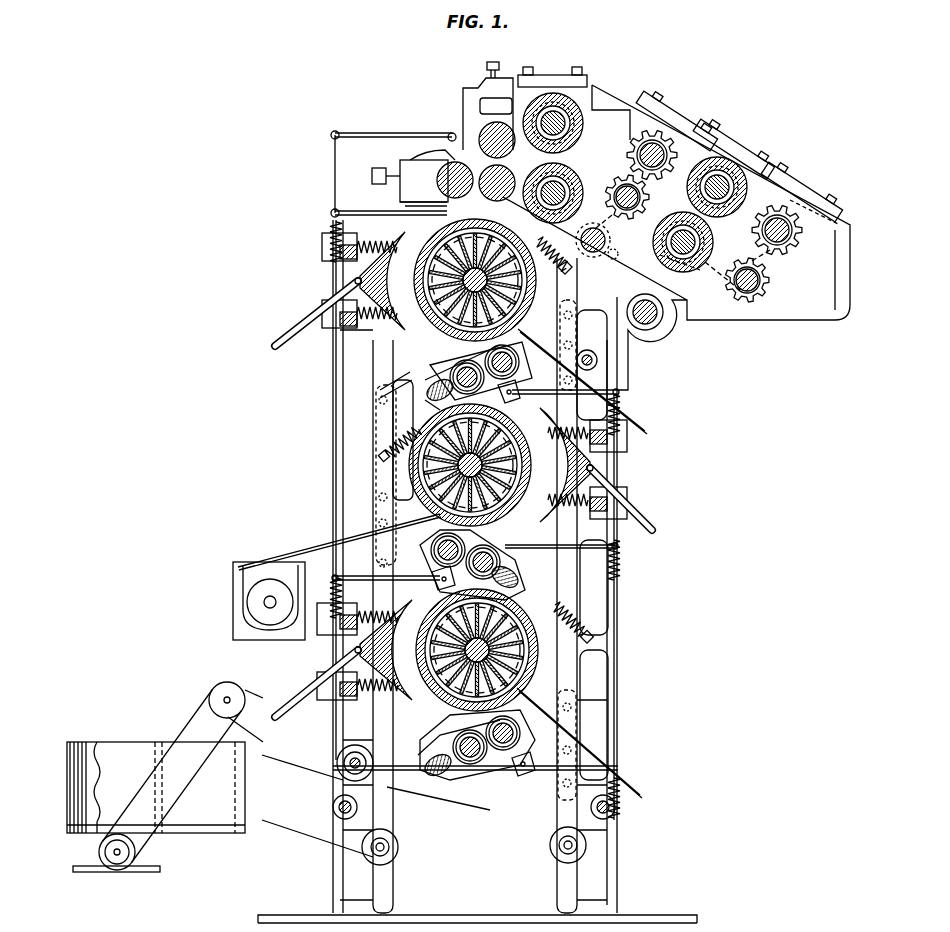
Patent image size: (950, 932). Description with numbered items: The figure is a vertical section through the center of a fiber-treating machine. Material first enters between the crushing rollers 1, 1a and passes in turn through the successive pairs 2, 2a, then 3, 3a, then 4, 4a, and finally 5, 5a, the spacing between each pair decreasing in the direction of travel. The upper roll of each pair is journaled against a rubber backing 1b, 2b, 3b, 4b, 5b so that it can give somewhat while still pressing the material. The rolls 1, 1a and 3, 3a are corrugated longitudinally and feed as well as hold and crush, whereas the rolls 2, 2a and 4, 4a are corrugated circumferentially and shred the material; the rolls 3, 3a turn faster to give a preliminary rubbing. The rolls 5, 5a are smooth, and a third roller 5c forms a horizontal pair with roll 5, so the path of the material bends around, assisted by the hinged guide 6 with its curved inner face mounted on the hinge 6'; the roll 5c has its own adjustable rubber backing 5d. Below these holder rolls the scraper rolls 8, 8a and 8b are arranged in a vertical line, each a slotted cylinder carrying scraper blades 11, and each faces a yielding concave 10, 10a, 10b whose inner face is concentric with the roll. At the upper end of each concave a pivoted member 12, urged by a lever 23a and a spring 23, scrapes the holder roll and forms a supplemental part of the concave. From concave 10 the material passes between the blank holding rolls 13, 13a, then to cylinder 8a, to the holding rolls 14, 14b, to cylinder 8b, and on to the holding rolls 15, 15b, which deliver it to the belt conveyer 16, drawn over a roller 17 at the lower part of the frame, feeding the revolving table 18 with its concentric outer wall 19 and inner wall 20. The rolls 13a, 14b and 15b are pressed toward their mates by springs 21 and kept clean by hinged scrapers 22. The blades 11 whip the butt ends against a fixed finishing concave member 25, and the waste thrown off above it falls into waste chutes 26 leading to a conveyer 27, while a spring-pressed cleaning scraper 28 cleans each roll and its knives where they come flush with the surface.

The crushing roller 1 is at (768, 292).
The crushing roller 1a is at (800, 250).
The rubber backing 1b is at (793, 203).
The crushing roller 2 is at (700, 270).
The crushing roller 2a is at (725, 160).
The rubber backing 2b is at (747, 170).
The crushing roller 3 is at (627, 211).
The crushing roller 3a is at (665, 130).
The rubber backing 3b is at (692, 125).
The crushing roller 4 is at (575, 176).
The crushing roller 4a is at (587, 78).
The rubber backing 4b is at (540, 93).
The crushing roller 5 is at (497, 190).
The crushing roller 5a is at (463, 132).
The rubber backing 5b is at (478, 105).
The third roller 5c is at (435, 203).
The rubber backing 5d is at (410, 172).
The hinged guide 6 is at (423, 151).
The hinge 6' is at (393, 162).
The scraper roll 8 is at (555, 262).
The scraper roll 8a is at (408, 462).
The scraper roll 8b is at (540, 656).
The concave element 10 is at (360, 335).
The concave element 10a is at (625, 466).
The concave element 10b is at (330, 645).
The scraper blade 11 is at (432, 332).
The coöperating member 12 is at (332, 213).
The holding roll 13 is at (485, 365).
The holding roll 13a is at (385, 395).
The holding roll 14 is at (436, 560).
The holding roll 14b is at (500, 565).
The holding roll 15 is at (518, 742).
The holding roll 15b is at (478, 764).
The belt conveyer 16 is at (492, 772).
The roller 17 is at (338, 760).
The revolving table 18 is at (218, 832).
The cylindrical outer wall 19 is at (156, 787).
The cylindrical inner vertical wall 20 is at (96, 752).
The spring 21 is at (440, 408).
The hinged scraper 22 is at (428, 382).
The spring 23 is at (328, 241).
The lever 23a is at (335, 228).
The fixed finishing concave member 25 is at (512, 362).
The waste chute 26 is at (587, 350).
The conveyer 27 is at (238, 600).
The cleaning scraper 28 is at (395, 446).